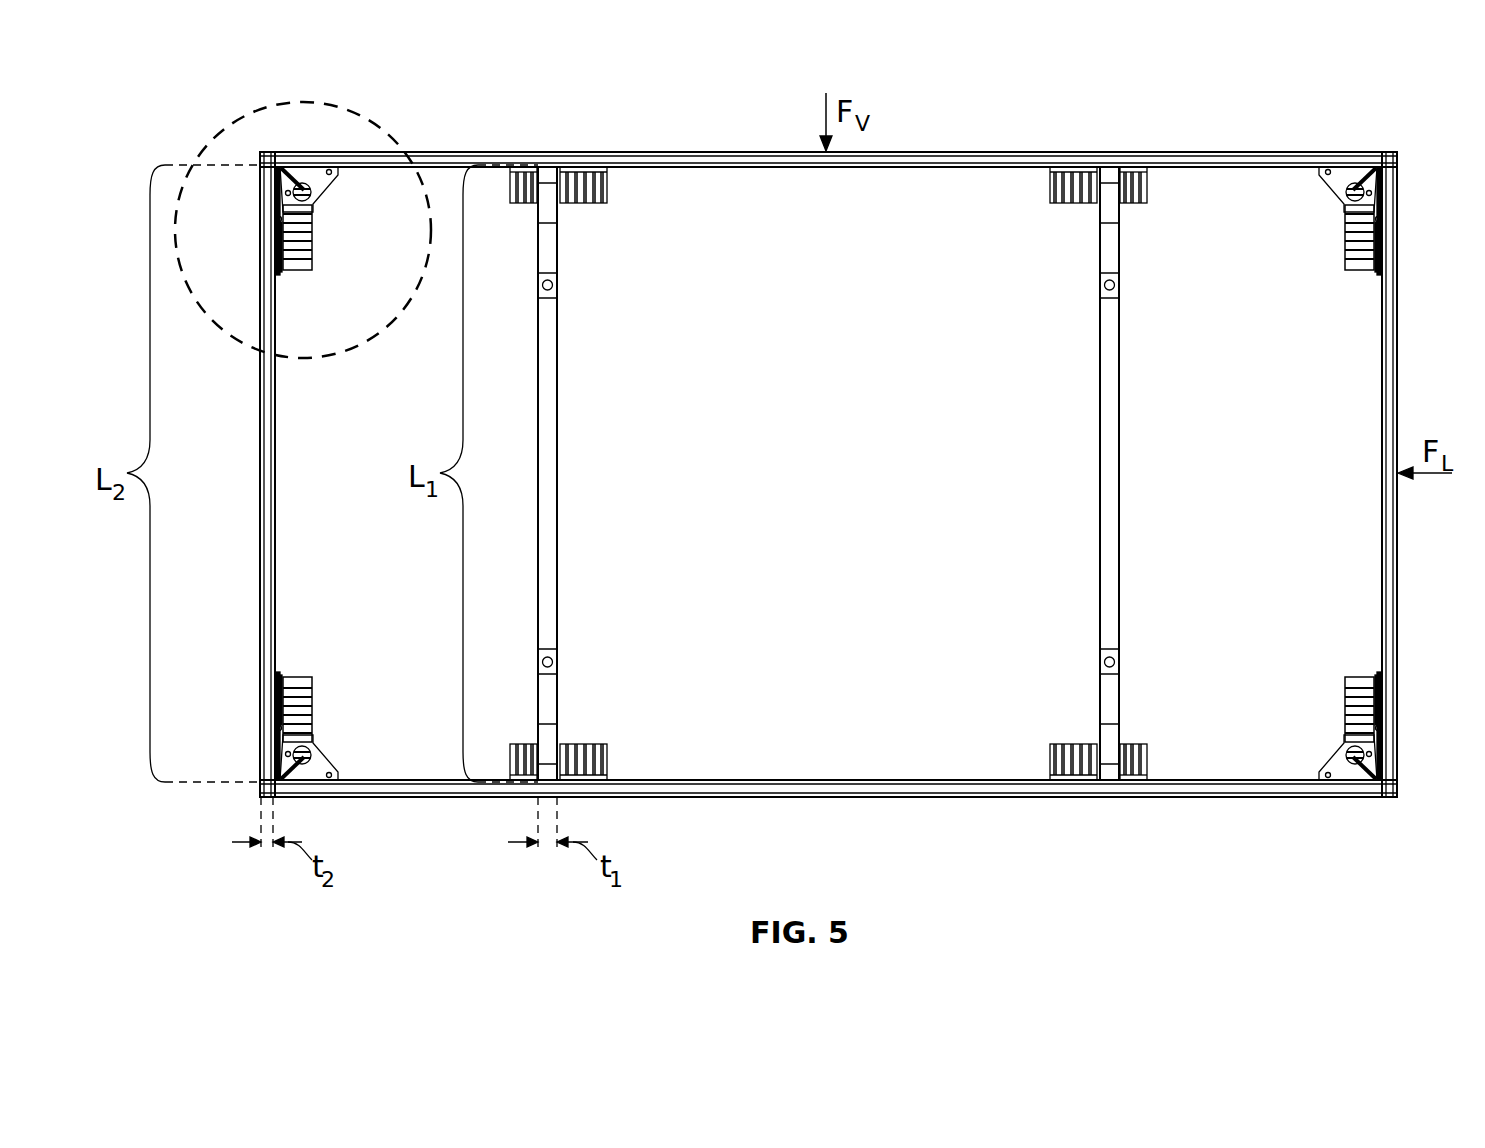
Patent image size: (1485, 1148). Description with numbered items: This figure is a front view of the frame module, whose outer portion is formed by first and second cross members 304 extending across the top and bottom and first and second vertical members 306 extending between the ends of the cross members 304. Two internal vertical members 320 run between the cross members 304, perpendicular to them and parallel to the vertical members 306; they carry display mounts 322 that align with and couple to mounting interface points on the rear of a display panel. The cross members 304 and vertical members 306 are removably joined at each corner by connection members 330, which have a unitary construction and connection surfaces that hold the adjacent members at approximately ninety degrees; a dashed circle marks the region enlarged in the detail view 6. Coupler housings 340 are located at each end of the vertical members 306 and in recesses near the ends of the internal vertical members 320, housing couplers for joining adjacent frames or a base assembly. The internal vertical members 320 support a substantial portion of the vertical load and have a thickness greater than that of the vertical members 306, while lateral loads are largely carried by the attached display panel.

The cross member 304 is at (745, 152).
The vertical member 306 is at (272, 418).
The internal vertical member 320 is at (550, 418).
The display mount 322 is at (1122, 282).
The connection member 330 is at (320, 753).
The coupler housing 340 is at (1345, 253).
The detail region shown in FIG. 6 is at (303, 102).